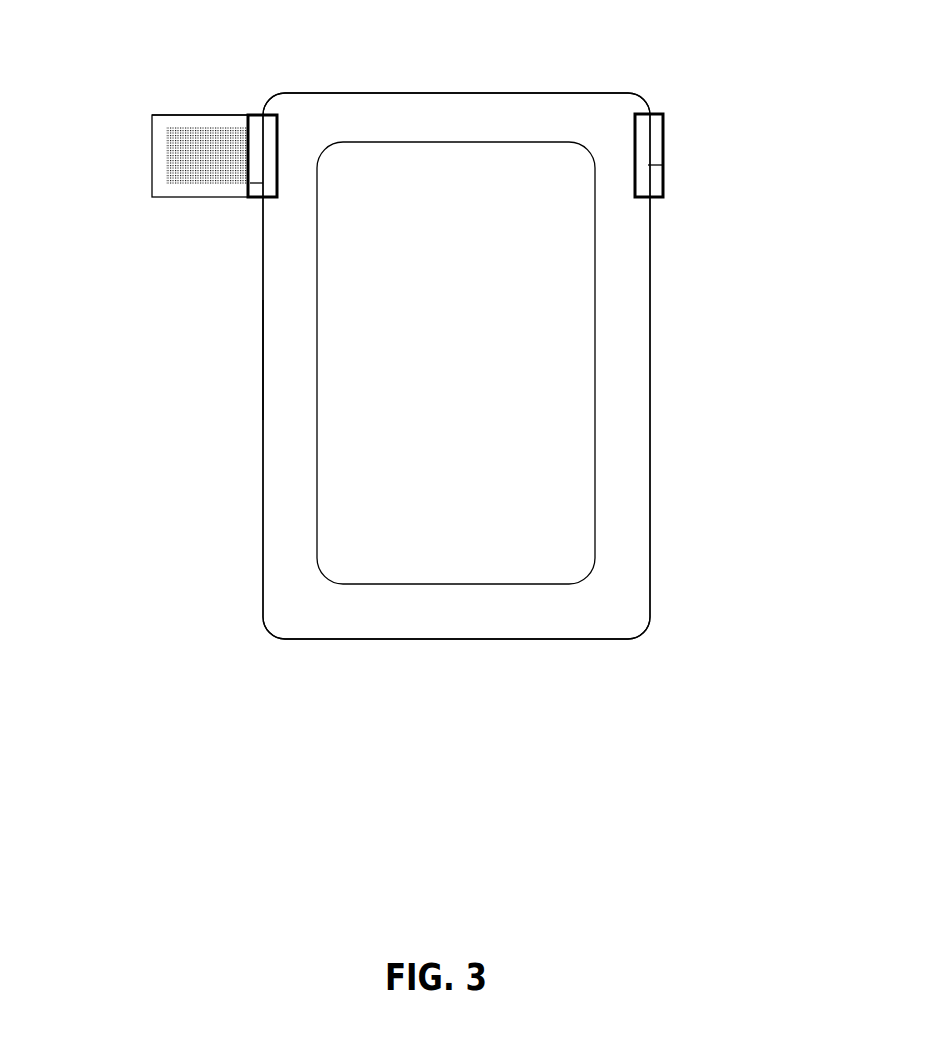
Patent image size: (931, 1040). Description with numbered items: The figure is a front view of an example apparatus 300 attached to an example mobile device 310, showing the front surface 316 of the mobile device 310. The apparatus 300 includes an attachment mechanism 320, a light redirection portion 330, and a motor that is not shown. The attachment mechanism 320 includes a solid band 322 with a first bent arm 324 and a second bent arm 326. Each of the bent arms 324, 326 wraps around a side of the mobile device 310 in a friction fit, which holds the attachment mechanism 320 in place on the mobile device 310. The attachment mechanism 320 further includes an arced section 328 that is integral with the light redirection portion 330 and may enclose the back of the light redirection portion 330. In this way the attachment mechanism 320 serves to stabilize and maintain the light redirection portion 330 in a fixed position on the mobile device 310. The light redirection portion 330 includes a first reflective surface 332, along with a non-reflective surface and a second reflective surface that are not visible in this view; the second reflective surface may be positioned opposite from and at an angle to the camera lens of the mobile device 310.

The apparatus 300 is at (733, 115).
The mobile device 310 is at (257, 528).
The front surface 316 is at (277, 363).
The attachment mechanism 320 is at (247, 115).
The solid band 322 is at (662, 115).
The first bent arm 324 is at (263, 183).
The second bent arm 326 is at (648, 166).
The arced section 328 is at (193, 115).
The light redirection portion 330 is at (152, 197).
The first reflective surface 332 is at (182, 155).